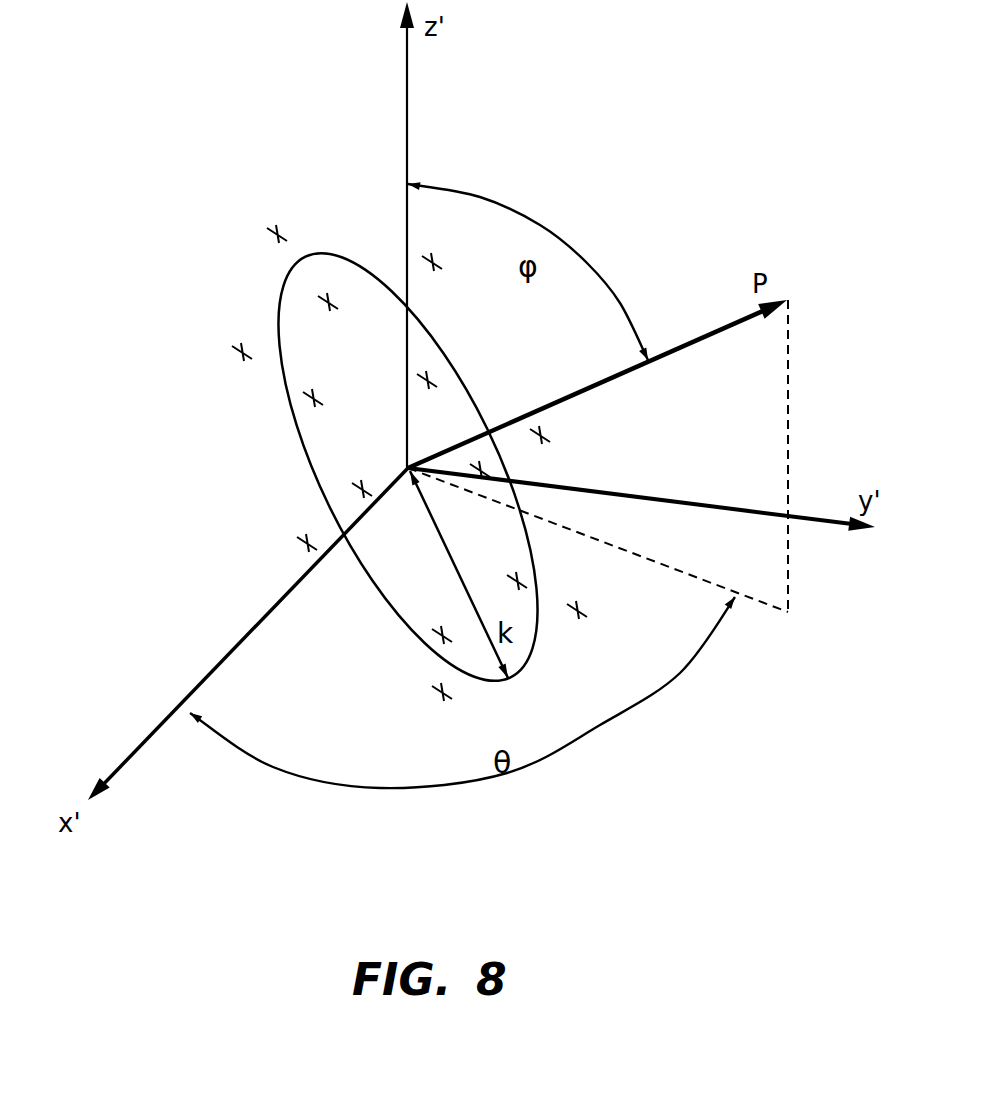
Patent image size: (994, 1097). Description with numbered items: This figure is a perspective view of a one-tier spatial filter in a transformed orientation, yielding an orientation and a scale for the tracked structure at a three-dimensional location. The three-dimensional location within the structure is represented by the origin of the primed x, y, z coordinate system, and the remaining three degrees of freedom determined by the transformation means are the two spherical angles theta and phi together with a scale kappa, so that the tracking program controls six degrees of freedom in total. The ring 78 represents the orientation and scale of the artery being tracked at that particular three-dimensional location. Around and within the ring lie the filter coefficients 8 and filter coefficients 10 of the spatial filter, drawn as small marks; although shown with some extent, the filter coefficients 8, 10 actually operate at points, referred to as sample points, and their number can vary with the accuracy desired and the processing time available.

The filter coefficients 10 is at (270, 232).
The filter coefficients 8 is at (340, 313).
The ring 78 is at (293, 413).